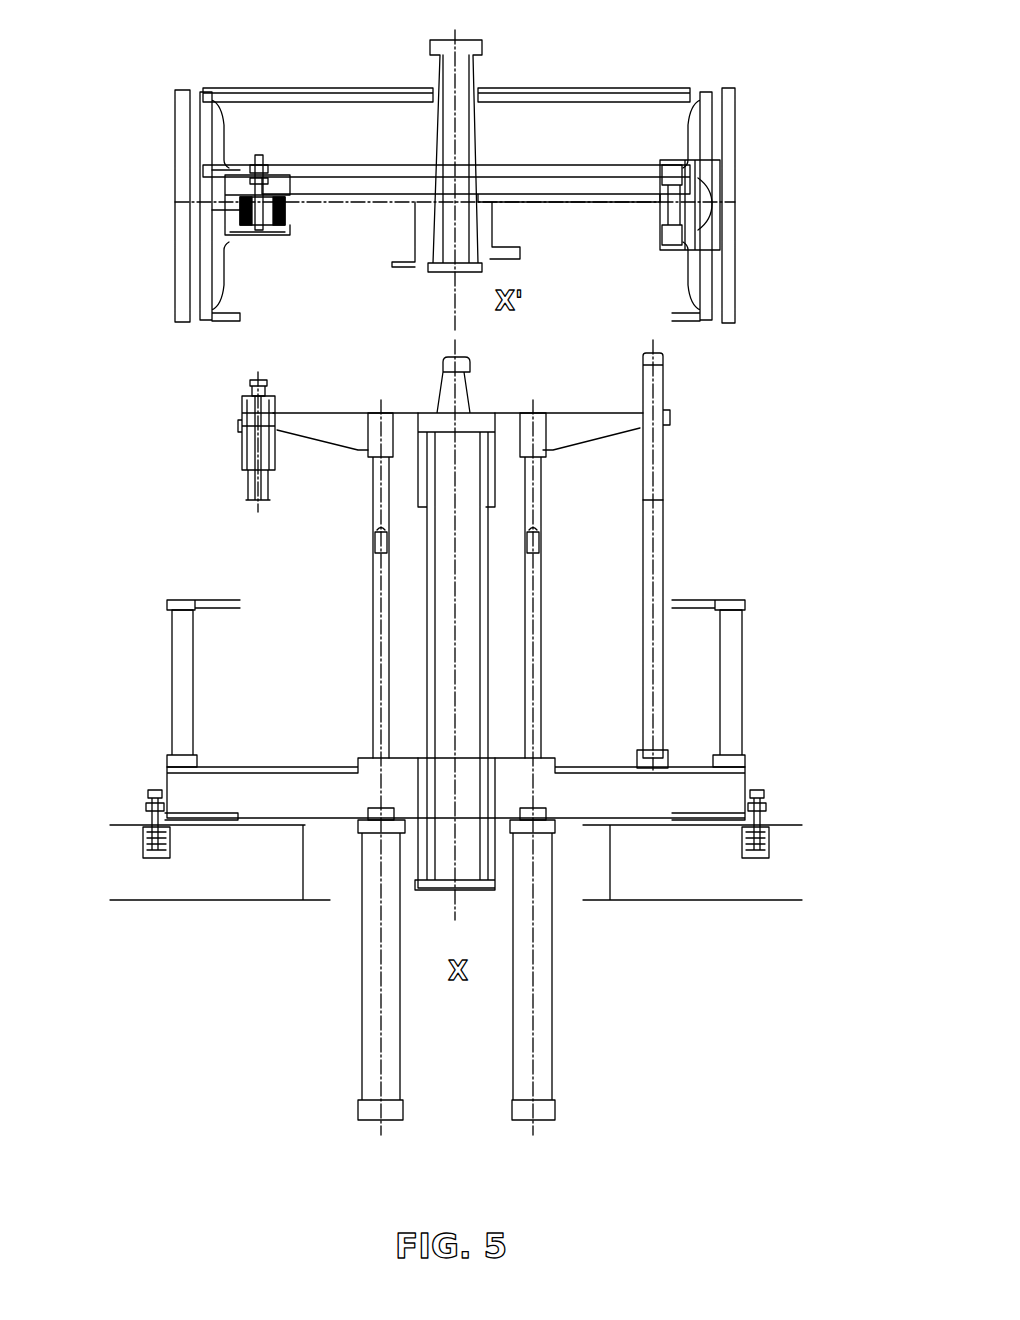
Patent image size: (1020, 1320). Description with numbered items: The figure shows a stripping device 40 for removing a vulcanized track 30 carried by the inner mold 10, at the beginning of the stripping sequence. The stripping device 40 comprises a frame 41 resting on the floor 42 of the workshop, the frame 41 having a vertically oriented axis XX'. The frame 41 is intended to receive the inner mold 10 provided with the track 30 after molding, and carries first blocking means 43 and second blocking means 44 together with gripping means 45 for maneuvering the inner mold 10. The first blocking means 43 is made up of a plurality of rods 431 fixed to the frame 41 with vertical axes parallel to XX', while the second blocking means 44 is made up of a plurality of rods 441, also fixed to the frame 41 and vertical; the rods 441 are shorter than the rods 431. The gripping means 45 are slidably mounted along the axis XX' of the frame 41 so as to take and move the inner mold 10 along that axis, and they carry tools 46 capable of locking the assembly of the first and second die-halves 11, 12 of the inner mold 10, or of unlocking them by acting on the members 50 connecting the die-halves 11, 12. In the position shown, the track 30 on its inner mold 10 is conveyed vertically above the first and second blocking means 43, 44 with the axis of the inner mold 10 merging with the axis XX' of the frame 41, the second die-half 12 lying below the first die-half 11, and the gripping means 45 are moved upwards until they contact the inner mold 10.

The inner mold 10 is at (695, 168).
The first die-half 11 is at (208, 92).
The second die-half 12 is at (202, 293).
The vulcanized track 30 is at (722, 277).
The connecting members 50 is at (205, 168).
The stripping device 40 is at (785, 553).
The frame 41 is at (660, 790).
The floor 42 is at (785, 840).
The first blocking means 43 is at (652, 457).
The rods 431 is at (650, 570).
The second blocking means 44 is at (178, 690).
The rods 441 is at (183, 672).
The gripping means 45 is at (240, 445).
The tools 46 is at (255, 381).